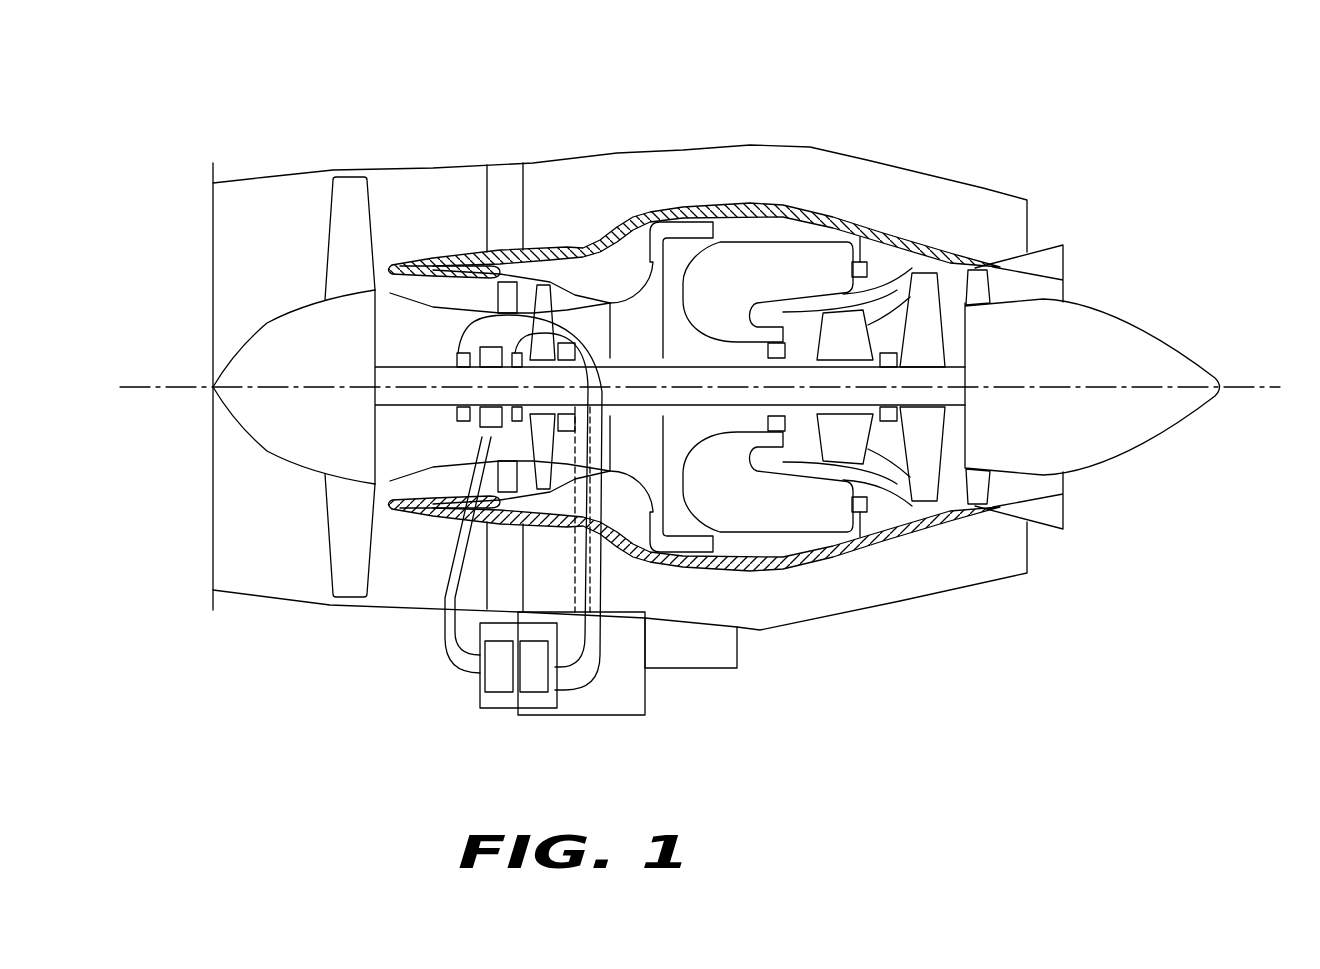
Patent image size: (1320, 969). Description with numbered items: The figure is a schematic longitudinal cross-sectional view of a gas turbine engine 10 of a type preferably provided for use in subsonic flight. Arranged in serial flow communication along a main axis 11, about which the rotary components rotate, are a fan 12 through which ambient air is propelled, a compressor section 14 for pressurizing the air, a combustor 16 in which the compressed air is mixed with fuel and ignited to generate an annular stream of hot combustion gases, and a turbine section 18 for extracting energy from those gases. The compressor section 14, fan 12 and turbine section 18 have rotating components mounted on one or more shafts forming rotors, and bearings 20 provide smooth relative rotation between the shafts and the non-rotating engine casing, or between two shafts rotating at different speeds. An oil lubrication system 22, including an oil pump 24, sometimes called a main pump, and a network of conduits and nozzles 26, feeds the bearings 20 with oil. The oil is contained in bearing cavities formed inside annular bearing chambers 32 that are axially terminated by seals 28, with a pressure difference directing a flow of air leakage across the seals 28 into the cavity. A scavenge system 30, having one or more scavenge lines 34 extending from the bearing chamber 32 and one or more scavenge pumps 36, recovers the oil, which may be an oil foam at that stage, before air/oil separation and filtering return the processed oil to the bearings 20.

The gas turbine engine 10 is at (862, 142).
The main axis 11 is at (1253, 385).
The fan 12 is at (347, 525).
The compressor section 14 is at (573, 300).
The combustor 16 is at (767, 262).
The turbine section 18 is at (887, 447).
The bearings 20 is at (493, 347).
The oil lubrication system 22 is at (447, 651).
The oil pump 24 is at (495, 677).
The network of conduits and nozzles 26 is at (446, 603).
The seals 28 is at (462, 352).
The scavenge system 30 is at (600, 630).
The bearing chambers 32 is at (519, 282).
The scavenge lines 34 is at (584, 674).
The scavenge pumps 36 is at (535, 692).